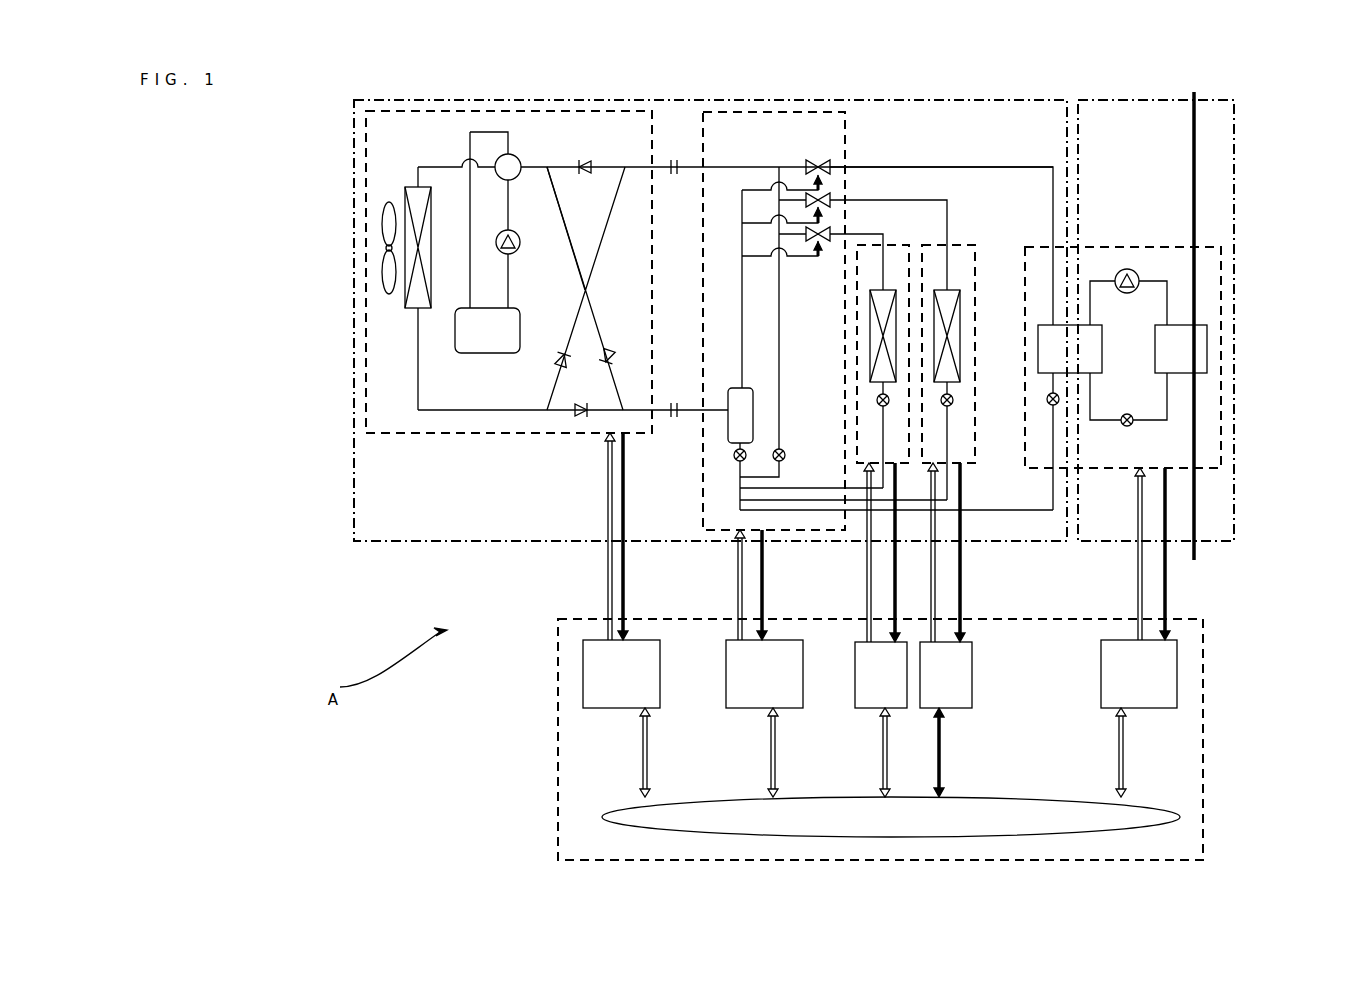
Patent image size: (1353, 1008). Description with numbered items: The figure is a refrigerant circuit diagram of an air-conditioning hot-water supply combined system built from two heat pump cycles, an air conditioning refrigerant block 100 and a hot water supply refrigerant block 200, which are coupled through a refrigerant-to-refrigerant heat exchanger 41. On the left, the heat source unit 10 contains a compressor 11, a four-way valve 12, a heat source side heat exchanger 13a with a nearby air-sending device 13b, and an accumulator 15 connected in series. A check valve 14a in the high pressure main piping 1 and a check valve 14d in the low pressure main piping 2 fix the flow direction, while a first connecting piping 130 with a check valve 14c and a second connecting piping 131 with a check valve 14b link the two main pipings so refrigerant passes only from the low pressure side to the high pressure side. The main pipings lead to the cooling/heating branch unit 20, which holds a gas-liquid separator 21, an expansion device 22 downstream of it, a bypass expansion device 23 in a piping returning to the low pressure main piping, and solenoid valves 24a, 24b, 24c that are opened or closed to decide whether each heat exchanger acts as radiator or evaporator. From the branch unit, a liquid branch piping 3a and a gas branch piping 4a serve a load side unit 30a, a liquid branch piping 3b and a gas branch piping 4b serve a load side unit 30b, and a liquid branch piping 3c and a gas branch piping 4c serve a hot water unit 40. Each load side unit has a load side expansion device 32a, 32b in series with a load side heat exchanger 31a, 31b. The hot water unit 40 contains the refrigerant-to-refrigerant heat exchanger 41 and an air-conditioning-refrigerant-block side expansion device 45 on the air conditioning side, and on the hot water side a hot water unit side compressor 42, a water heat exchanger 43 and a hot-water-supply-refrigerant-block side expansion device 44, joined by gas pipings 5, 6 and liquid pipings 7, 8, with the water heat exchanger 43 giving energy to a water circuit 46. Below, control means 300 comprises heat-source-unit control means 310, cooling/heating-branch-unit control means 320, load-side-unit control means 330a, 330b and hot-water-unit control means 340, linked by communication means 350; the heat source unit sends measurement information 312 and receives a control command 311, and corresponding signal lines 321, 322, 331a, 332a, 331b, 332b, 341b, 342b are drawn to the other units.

The air conditioning refrigerant block 100 is at (352, 113).
The hot water supply refrigerant block 200 is at (1236, 145).
The water circuit 46 is at (1196, 96).
The heat source unit 10 is at (428, 108).
The heat source side heat exchanger 13a is at (408, 187).
The air-sending device 13b is at (385, 245).
The four-way valve 12 is at (520, 160).
The compressor 11 is at (512, 254).
The accumulator 15 is at (466, 353).
The first connecting piping 130 is at (605, 230).
The second connecting piping 131 is at (556, 195).
The check valve 14d is at (583, 160).
The check valve 14a is at (583, 418).
The check valve 14b is at (608, 352).
The check valve 14c is at (556, 362).
The low pressure main piping 2 is at (672, 174).
The high pressure main piping 1 is at (674, 417).
The cooling/heating branch unit 20 is at (846, 134).
The solenoid valve 24c is at (816, 160).
The solenoid valve 24b is at (776, 190).
The solenoid valve 24a is at (816, 242).
The gas branch piping 4c is at (982, 167).
The gas branch piping 4b is at (947, 200).
The gas branch piping 4a is at (883, 234).
The load side unit 30a is at (909, 246).
The load side unit 30b is at (975, 246).
The load side heat exchanger 31a is at (870, 318).
The load side heat exchanger 31b is at (960, 318).
The load side expansion device 32a is at (877, 398).
The load side expansion device 32b is at (953, 398).
The gas-liquid separator 21 is at (752, 390).
The expansion device 22 is at (737, 460).
The bypass expansion device 23 is at (784, 450).
The liquid branch piping 3a is at (782, 488).
The liquid branch piping 3b is at (815, 500).
The liquid branch piping 3c is at (982, 510).
The hot water unit 40 is at (1026, 247).
The refrigerant-to-refrigerant heat exchanger 41 is at (1045, 325).
The air-conditioning-refrigerant-block side expansion device 45 is at (1046, 401).
The gas piping 5 is at (1094, 282).
The gas piping 6 is at (1156, 282).
The hot water unit side compressor 42 is at (1130, 293).
The water heat exchanger 43 is at (1184, 374).
The liquid piping 8 is at (1096, 421).
The liquid piping 7 is at (1160, 421).
The hot-water-supply-refrigerant-block side expansion device 44 is at (1133, 418).
The control command 311 is at (605, 552).
The measurement information 312 is at (626, 562).
The sensor signal line 321 is at (736, 556).
The control signal line 322 is at (765, 560).
The sensor signal line 331a is at (866, 552).
The control signal line 332a is at (893, 590).
The sensor signal line 331b is at (936, 590).
The control signal line 332b is at (962, 555).
The sensor signal line 341b is at (1138, 585).
The control signal line 342b is at (1168, 575).
The control means 300 is at (558, 655).
The heat-source-unit control means 310 is at (618, 710).
The cooling/heating-branch-unit control means 320 is at (755, 710).
The load-side-unit control means 330a is at (870, 710).
The load-side-unit control means 330b is at (972, 710).
The hot-water-unit control means 340 is at (1145, 710).
The communication means 350 is at (605, 815).